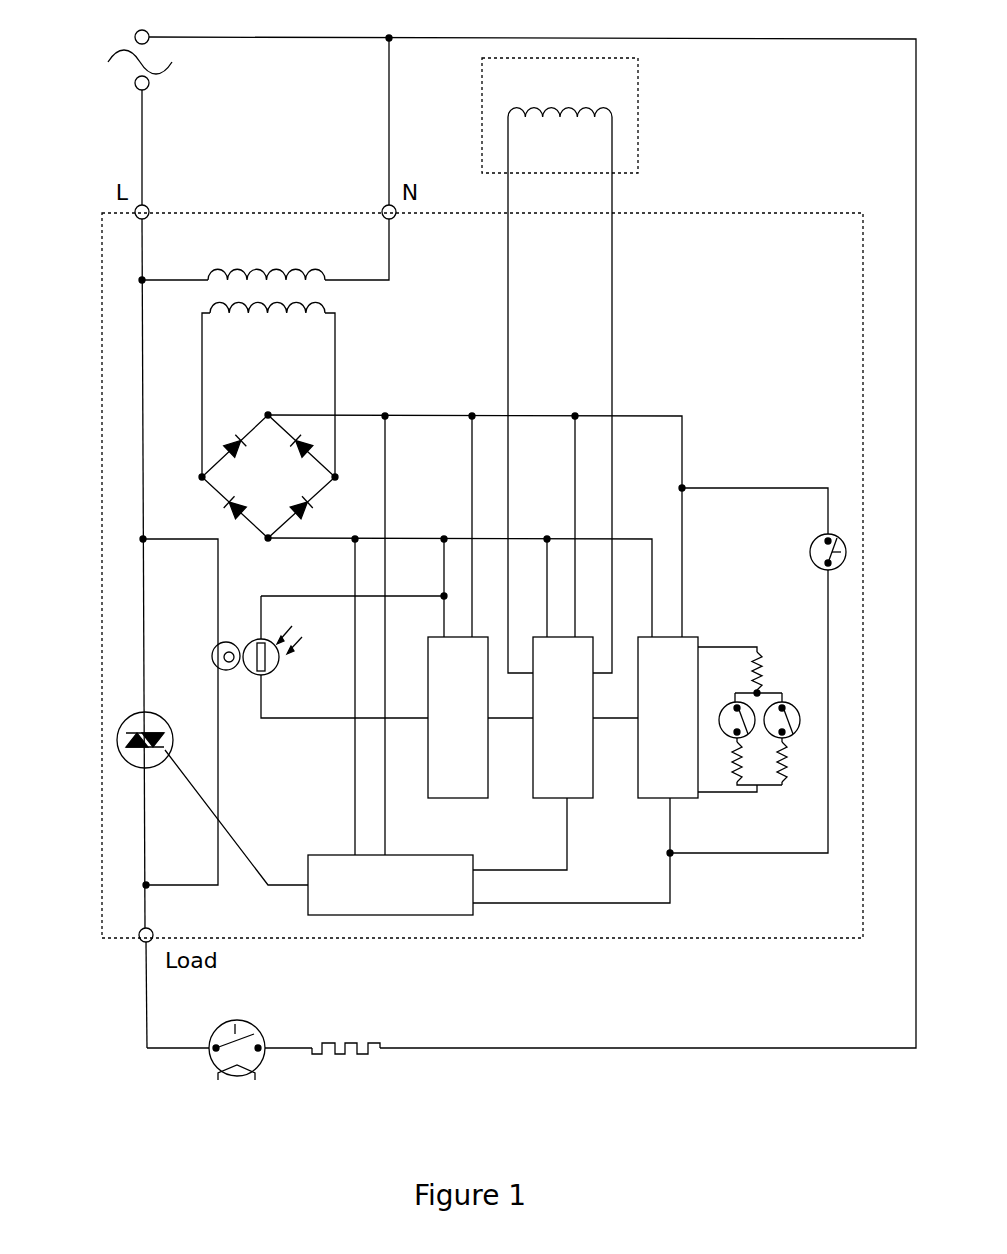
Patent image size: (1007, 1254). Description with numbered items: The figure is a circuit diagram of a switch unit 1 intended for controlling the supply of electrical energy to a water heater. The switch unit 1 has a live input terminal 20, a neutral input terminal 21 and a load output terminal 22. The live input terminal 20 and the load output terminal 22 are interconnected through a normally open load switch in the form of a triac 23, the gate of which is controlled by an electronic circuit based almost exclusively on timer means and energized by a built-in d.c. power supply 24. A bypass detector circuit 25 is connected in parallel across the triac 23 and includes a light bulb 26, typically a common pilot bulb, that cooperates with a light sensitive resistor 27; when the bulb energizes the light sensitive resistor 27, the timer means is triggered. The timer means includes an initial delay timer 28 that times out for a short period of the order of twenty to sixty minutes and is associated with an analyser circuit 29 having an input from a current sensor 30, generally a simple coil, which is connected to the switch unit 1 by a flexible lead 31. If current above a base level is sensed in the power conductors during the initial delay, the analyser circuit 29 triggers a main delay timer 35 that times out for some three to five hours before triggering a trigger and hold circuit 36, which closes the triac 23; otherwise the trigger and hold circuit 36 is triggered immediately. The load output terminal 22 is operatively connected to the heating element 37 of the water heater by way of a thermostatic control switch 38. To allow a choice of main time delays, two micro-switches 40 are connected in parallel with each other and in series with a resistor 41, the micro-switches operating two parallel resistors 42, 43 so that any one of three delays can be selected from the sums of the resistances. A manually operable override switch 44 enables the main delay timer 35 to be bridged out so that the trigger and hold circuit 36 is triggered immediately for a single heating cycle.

The switch unit 1 is at (483, 938).
The live input terminal 20 is at (148, 207).
The neutral input terminal 21 is at (385, 207).
The load output terminal 22 is at (143, 942).
The triac 23 is at (134, 754).
The d.c. power supply 24 is at (264, 392).
The bypass detector circuit 25 is at (217, 590).
The light bulb 26 is at (216, 654).
The light sensitive resistor 27 is at (252, 673).
The initial delay timer 28 is at (478, 778).
The analyser circuit 29 is at (575, 780).
The current sensor 30 is at (565, 110).
The flexible lead 31 is at (508, 195).
The main delay timer 35 is at (675, 783).
The trigger and hold circuit 36 is at (392, 915).
The heating element 37 is at (343, 1052).
The thermostatic control switch 38 is at (228, 1055).
The micro-switches 40 is at (738, 717).
The resistor 41 is at (757, 673).
The resistor 42 is at (787, 762).
The resistor 43 is at (738, 768).
The override switch 44 is at (845, 532).